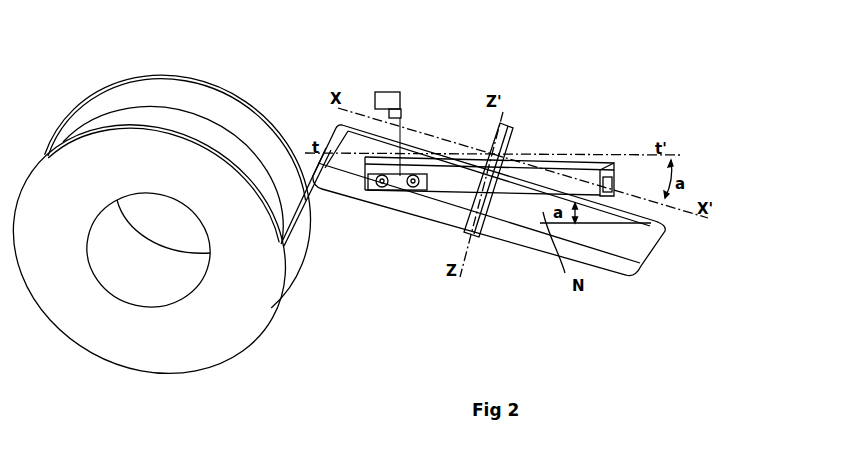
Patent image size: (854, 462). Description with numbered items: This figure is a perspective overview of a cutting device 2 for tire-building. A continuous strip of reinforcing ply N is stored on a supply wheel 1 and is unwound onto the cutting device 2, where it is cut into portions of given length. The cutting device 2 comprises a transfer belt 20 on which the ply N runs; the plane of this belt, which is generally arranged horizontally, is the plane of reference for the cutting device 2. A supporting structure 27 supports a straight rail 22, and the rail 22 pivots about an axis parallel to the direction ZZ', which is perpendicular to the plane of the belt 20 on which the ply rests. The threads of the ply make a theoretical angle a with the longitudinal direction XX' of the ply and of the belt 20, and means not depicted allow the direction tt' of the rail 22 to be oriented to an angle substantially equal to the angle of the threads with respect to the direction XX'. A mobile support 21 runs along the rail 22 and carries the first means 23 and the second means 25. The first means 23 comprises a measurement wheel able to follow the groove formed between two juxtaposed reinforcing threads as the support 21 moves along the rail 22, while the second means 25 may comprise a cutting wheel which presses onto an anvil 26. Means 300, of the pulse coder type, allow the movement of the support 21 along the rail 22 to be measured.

The supply wheel 1 is at (92, 153).
The cutting device 2 is at (434, 131).
The pulse coder means 300 is at (387, 92).
The transfer belt 20 is at (633, 240).
The mobile support 21 is at (395, 193).
The straight rail 22 is at (572, 160).
The first means 23 is at (417, 197).
The second means 25 is at (372, 190).
The anvil 26 is at (593, 190).
The supporting structure 27 is at (475, 227).